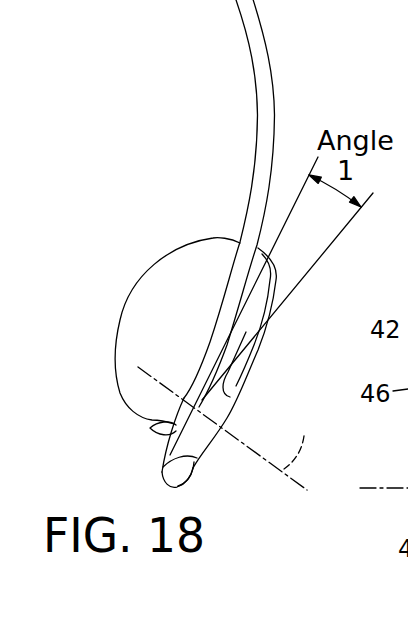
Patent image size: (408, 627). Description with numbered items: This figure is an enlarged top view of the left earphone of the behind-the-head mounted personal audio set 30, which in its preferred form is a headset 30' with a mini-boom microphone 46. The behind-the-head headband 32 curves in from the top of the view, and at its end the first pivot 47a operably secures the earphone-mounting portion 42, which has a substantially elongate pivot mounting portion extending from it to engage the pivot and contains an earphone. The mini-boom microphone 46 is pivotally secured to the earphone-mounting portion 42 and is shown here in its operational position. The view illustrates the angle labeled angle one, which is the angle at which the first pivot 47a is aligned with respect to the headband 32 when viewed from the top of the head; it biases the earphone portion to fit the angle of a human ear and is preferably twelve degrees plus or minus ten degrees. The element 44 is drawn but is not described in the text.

The behind-the-head headband 32 is at (247, 33).
The headset 30' is at (145, 331).
The behind-the-head mounted personal audio set 30 is at (255, 349).
The earphone-mounting portion 42 is at (225, 400).
The tip portion 44 is at (157, 422).
The mini-boom microphone 46 is at (163, 467).
The first pivot 47a is at (308, 437).